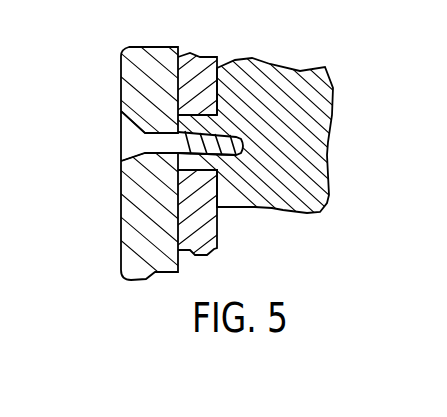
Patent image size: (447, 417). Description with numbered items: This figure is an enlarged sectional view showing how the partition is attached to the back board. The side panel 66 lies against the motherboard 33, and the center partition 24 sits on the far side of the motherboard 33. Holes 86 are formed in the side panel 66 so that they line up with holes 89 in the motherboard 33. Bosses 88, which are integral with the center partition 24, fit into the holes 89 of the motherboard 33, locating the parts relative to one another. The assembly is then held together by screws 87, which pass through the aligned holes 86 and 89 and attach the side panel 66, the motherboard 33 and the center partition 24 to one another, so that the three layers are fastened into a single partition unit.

The center partition 24 is at (294, 88).
The motherboard 33 is at (193, 73).
The side panel 66 is at (132, 71).
The holes 86 is at (132, 121).
The screws 87 is at (135, 143).
The bosses 88 is at (222, 128).
The holes 89 is at (200, 163).